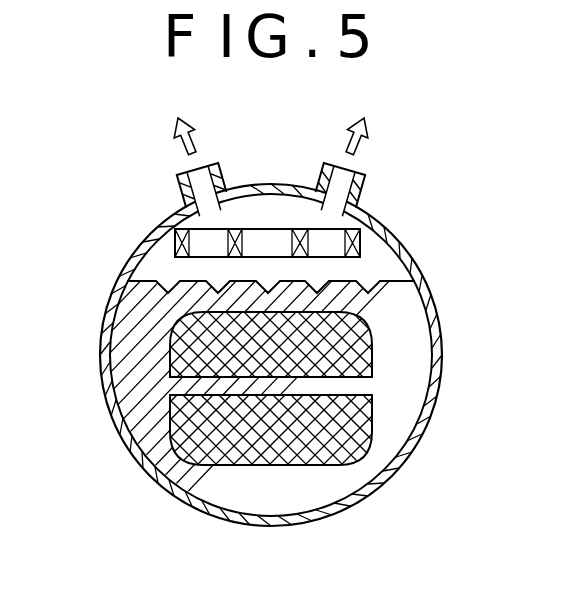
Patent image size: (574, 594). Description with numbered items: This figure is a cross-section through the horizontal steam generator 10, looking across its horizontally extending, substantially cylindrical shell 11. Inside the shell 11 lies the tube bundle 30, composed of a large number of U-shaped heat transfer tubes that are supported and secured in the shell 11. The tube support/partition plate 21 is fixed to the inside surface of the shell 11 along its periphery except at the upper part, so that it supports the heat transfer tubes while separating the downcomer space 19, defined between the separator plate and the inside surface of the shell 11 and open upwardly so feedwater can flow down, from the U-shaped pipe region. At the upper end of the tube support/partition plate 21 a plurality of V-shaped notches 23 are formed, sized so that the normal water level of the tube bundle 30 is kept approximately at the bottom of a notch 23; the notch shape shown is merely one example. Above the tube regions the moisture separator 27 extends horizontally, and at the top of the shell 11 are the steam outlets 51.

The horizontal steam generator 10 is at (443, 390).
The shell 11 is at (127, 427).
The space 19 is at (122, 372).
The tube support/partition plate 21 is at (413, 327).
The V-shaped notches 23 is at (167, 281).
The moisture separator 27 is at (175, 240).
The tube bundle 30 is at (352, 483).
The steam outlets 51 is at (176, 181).